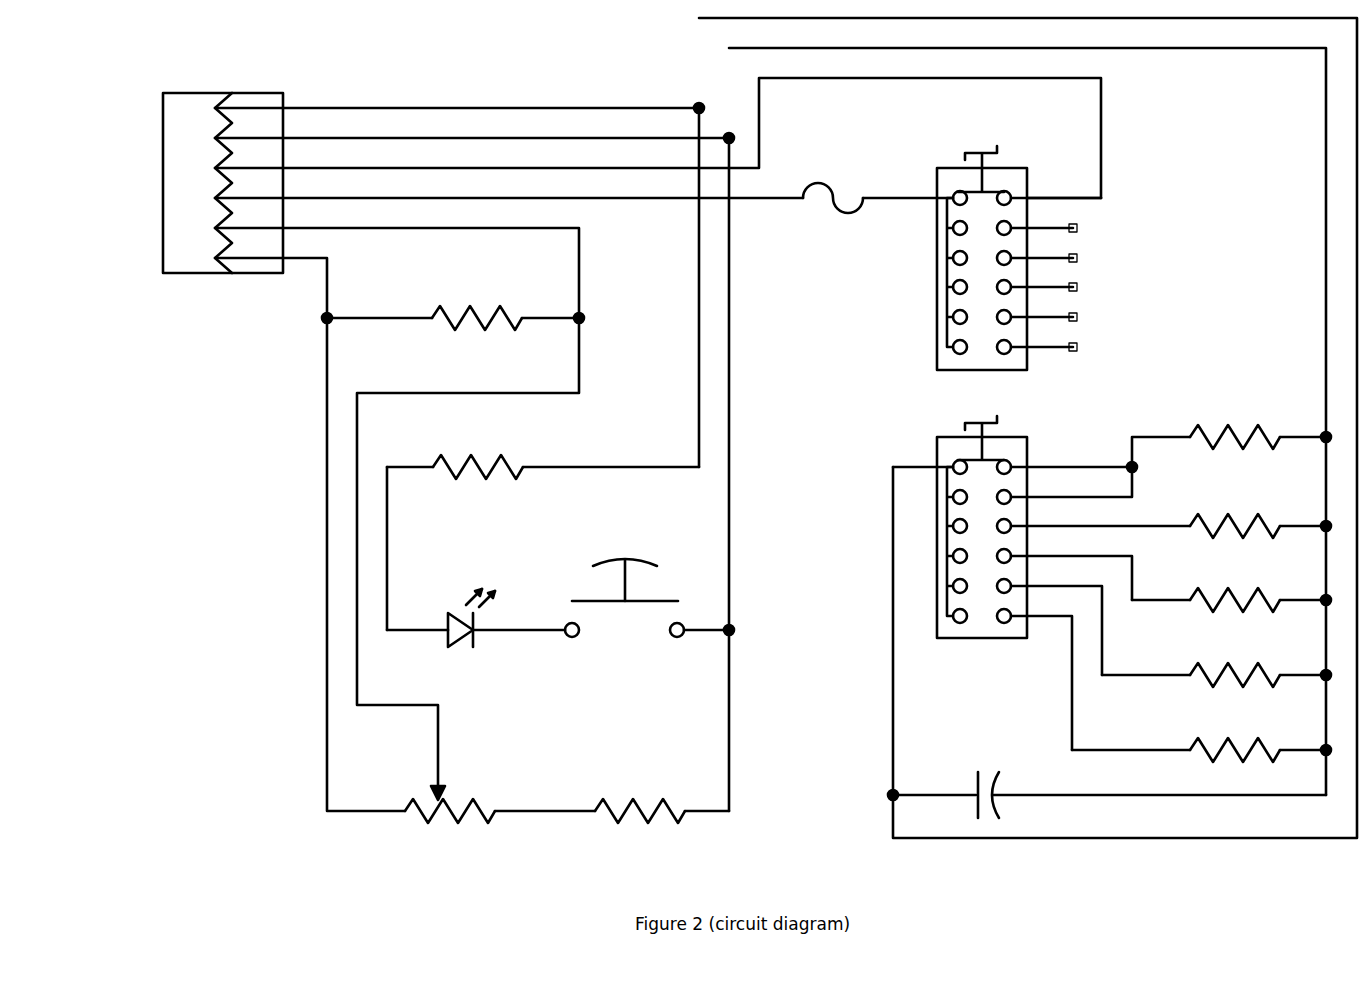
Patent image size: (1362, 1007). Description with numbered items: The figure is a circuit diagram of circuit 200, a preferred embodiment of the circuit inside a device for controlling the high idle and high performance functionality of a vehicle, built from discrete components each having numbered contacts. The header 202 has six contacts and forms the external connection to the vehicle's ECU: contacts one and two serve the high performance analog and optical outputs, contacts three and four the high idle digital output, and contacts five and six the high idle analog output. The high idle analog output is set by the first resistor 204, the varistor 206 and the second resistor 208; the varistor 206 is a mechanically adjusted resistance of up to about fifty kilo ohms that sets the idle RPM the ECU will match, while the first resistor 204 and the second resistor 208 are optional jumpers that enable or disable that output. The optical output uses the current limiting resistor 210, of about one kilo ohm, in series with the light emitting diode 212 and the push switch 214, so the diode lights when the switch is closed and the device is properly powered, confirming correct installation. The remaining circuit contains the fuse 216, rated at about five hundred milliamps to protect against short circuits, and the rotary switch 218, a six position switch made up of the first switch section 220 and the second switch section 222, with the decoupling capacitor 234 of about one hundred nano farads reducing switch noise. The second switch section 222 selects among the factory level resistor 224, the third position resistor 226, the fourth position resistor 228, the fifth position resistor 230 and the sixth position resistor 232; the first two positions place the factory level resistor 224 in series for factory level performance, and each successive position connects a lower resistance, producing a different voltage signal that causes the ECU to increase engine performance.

The circuit 200 is at (199, 840).
The header J1 202 is at (271, 79).
The resistor R10 204 is at (525, 263).
The varistor R8 206 is at (506, 733).
The resistor R6 208 is at (685, 769).
The resistor R7 210 is at (525, 425).
The light emitting diode D1 212 is at (510, 560).
The switch S2 214 is at (675, 542).
The fuse F1 216 is at (870, 135).
The switch S1 218 is at (1178, 233).
The switch S1.1 220 is at (1036, 129).
The switch S1.2 222 is at (1036, 412).
The resistor R5 224 is at (1285, 402).
The resistor R1 226 is at (1285, 500).
The resistor R2 228 is at (1285, 576).
The resistor R3 230 is at (1285, 649).
The resistor R4 232 is at (1285, 724).
The capacitor C1 234 is at (1024, 742).